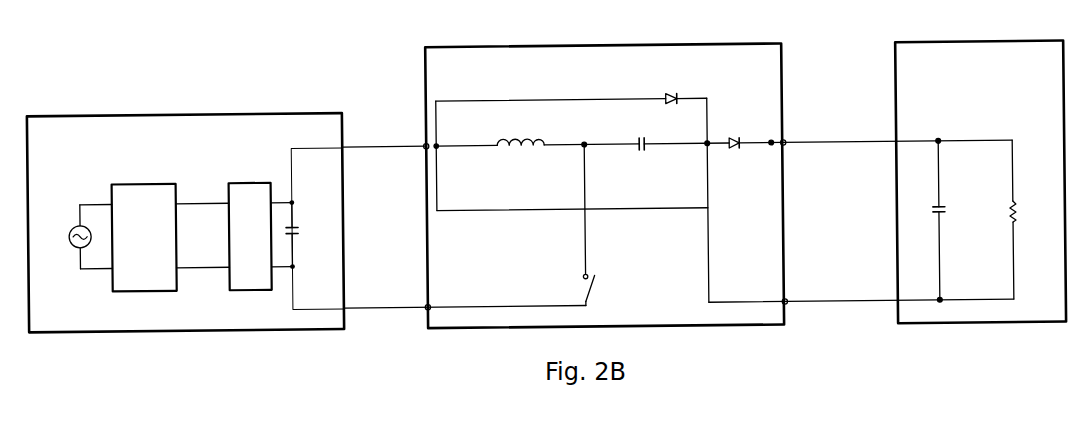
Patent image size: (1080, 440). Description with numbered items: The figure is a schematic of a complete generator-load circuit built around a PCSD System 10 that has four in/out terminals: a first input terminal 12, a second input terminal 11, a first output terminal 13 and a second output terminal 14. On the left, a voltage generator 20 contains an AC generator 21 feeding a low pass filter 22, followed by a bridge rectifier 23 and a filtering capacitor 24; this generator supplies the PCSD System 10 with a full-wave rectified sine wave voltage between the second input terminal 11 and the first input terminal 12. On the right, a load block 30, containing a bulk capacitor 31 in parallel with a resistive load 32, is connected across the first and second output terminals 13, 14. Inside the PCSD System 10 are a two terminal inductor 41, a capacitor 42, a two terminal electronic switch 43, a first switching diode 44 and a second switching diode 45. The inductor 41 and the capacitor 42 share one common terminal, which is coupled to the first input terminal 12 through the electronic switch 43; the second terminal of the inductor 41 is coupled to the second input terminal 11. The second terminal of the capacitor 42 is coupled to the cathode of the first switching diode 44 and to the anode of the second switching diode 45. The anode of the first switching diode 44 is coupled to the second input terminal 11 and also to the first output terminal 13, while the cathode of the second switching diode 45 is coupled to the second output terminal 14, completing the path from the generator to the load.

The PCSD System 10 is at (603, 173).
The second input terminal Vin1 11 is at (409, 160).
The first input terminal Vin0 12 is at (410, 322).
The first output terminal Vout0 13 is at (803, 321).
The second output terminal Vout1 14 is at (800, 158).
The voltage generator VG1 20 is at (53, 106).
The AC generator Gac 21 is at (67, 215).
The low pass filter LPF 22 is at (118, 172).
The bridge rectifier BR 23 is at (237, 170).
The filtering capacitor Cf 24 is at (300, 218).
The Zload block 30 is at (956, 162).
The bulk capacitor CL 31 is at (950, 195).
The resistive load RL 32 is at (1023, 196).
The inductor L1 41 is at (513, 160).
The capacitor C1 42 is at (640, 159).
The electronic switch SW1 43 is at (572, 276).
The first switching diode D1 44 is at (686, 94).
The second switching diode D2 45 is at (737, 132).